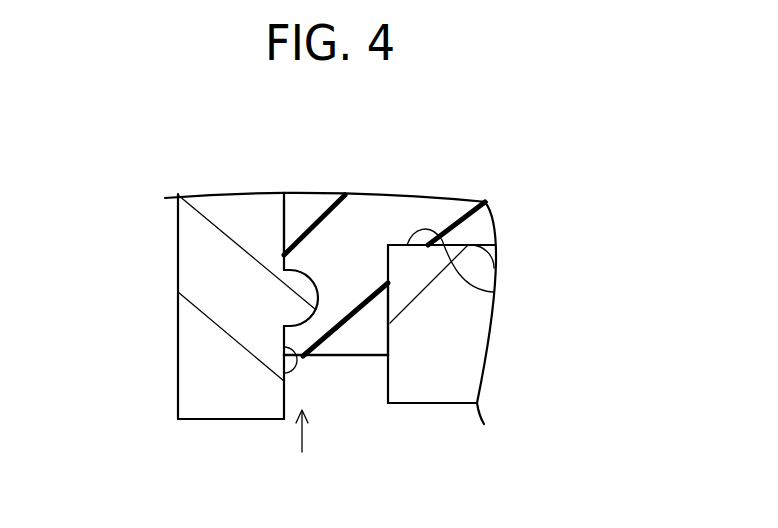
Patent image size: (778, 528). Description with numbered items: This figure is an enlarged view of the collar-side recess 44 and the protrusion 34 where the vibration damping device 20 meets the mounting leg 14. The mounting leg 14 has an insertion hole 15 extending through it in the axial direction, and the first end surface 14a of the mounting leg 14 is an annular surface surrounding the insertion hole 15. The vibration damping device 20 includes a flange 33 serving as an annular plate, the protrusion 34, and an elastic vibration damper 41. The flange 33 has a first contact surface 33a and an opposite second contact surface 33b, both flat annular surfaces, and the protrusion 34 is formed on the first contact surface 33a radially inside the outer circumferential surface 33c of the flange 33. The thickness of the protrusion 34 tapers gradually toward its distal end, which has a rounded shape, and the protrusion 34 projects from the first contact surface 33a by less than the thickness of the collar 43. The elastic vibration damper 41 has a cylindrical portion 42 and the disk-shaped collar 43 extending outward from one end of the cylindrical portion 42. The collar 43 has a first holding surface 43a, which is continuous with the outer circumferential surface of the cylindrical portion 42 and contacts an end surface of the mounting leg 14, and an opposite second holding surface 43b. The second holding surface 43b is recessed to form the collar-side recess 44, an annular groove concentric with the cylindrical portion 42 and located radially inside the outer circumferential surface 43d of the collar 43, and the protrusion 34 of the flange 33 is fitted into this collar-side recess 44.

The mounting leg 14 is at (431, 365).
The first end surface 14a is at (388, 378).
The insertion hole 15 is at (493, 292).
The vibration damping device 20 is at (297, 447).
The flange 33 is at (202, 344).
The first contact surface 33a is at (285, 372).
The second contact surface 33b is at (178, 266).
The outer circumferential surface 33c is at (228, 420).
The protrusion 34 is at (308, 281).
The elastic vibration damper 41 is at (497, 224).
The cylindrical portion 42 is at (498, 266).
The collar 43 is at (351, 291).
The first holding surface 43a is at (388, 339).
The second holding surface 43b is at (284, 213).
The outer circumferential surface 43d is at (336, 357).
The collar-side recess 44 is at (320, 320).